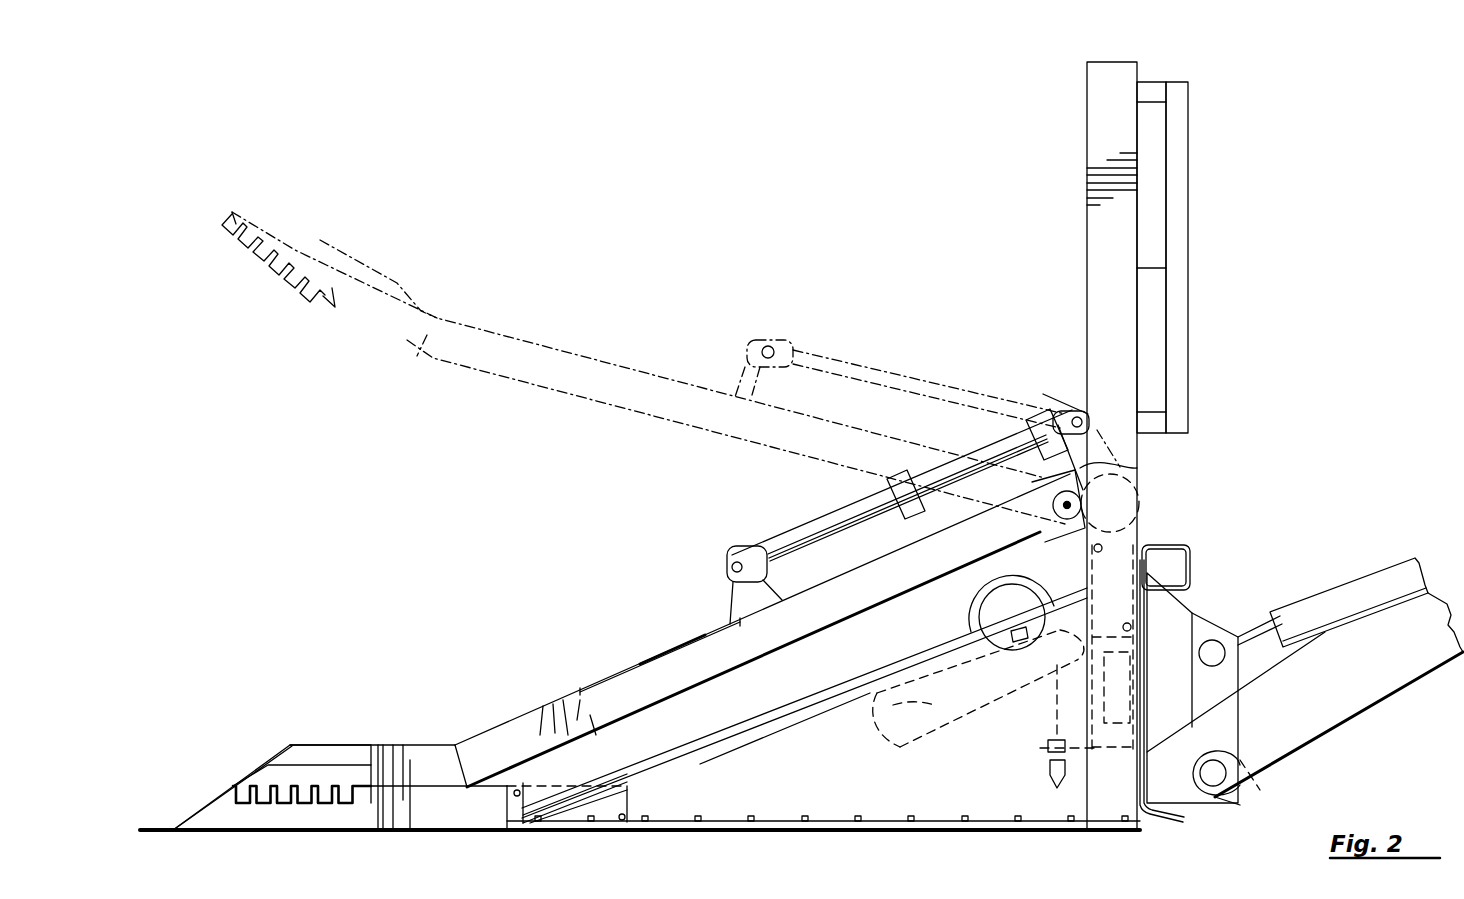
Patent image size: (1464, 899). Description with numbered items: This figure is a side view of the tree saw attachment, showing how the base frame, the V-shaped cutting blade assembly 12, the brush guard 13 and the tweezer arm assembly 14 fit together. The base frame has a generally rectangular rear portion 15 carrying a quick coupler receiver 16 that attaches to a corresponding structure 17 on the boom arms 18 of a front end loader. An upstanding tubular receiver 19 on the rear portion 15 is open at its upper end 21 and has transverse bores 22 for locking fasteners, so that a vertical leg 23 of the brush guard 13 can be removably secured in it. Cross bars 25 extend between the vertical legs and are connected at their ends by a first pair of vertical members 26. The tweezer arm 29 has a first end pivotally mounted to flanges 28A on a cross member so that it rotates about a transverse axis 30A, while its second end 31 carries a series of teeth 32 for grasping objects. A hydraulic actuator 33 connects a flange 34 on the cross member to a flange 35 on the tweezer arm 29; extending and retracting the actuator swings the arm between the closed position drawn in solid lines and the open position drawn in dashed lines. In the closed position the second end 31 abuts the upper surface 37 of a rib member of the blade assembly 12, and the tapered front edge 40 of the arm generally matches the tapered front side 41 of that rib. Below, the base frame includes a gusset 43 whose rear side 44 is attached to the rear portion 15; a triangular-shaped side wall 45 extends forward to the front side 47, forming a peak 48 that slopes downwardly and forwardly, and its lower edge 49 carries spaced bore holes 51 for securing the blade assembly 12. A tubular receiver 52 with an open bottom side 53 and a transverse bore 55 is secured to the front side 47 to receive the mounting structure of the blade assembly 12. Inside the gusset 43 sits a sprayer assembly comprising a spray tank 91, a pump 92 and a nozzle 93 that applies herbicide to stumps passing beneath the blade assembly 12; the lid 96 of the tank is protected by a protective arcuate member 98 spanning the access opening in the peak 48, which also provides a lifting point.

The V-shaped cutting blade assembly 12 is at (172, 831).
The brush guard 13 is at (1070, 237).
The tweezer arm assembly 14 is at (622, 665).
The rectangular rear portion 15 is at (1148, 667).
The quick coupler receiver 16 is at (1175, 612).
The corresponding structure 17 is at (1190, 792).
The boom arms 18 is at (1362, 688).
The upstanding tubular receiver 19 is at (1110, 770).
The upper ends 21 is at (1122, 552).
The transverse bores 22 is at (1102, 549).
The first vertical leg 23 is at (1120, 120).
The cross bars 25 is at (1150, 95).
The first pair of vertical members 26 is at (1177, 203).
The flanges 28A is at (1075, 525).
The tweezer arm 29 is at (520, 345).
The transverse axis 30A is at (1070, 505).
The second end 31 is at (337, 745).
The teeth 32 is at (323, 803).
The hydraulic actuator 33 is at (963, 465).
The flange 34 is at (1137, 468).
The flange 35 is at (740, 596).
The upper surface 37 is at (413, 780).
The tapered front edge 40 is at (292, 746).
The tapered front side 41 is at (235, 800).
The gusset 43 is at (895, 790).
The rear side 44 is at (1080, 790).
The first triangular-shaped side wall 45 is at (958, 775).
The front side 47 is at (555, 810).
The peak 48 is at (832, 690).
The lower edge 49 is at (743, 834).
The bore holes 51 is at (797, 840).
The tubular receiver 52 is at (510, 795).
The open bottom side 53 is at (513, 832).
The transverse bore 55 is at (623, 815).
The spray tank 91 is at (885, 720).
The pump 92 is at (1258, 776).
The nozzle 93 is at (1052, 764).
The lid 96 is at (1014, 630).
The protective arcuate member 98 is at (1010, 640).